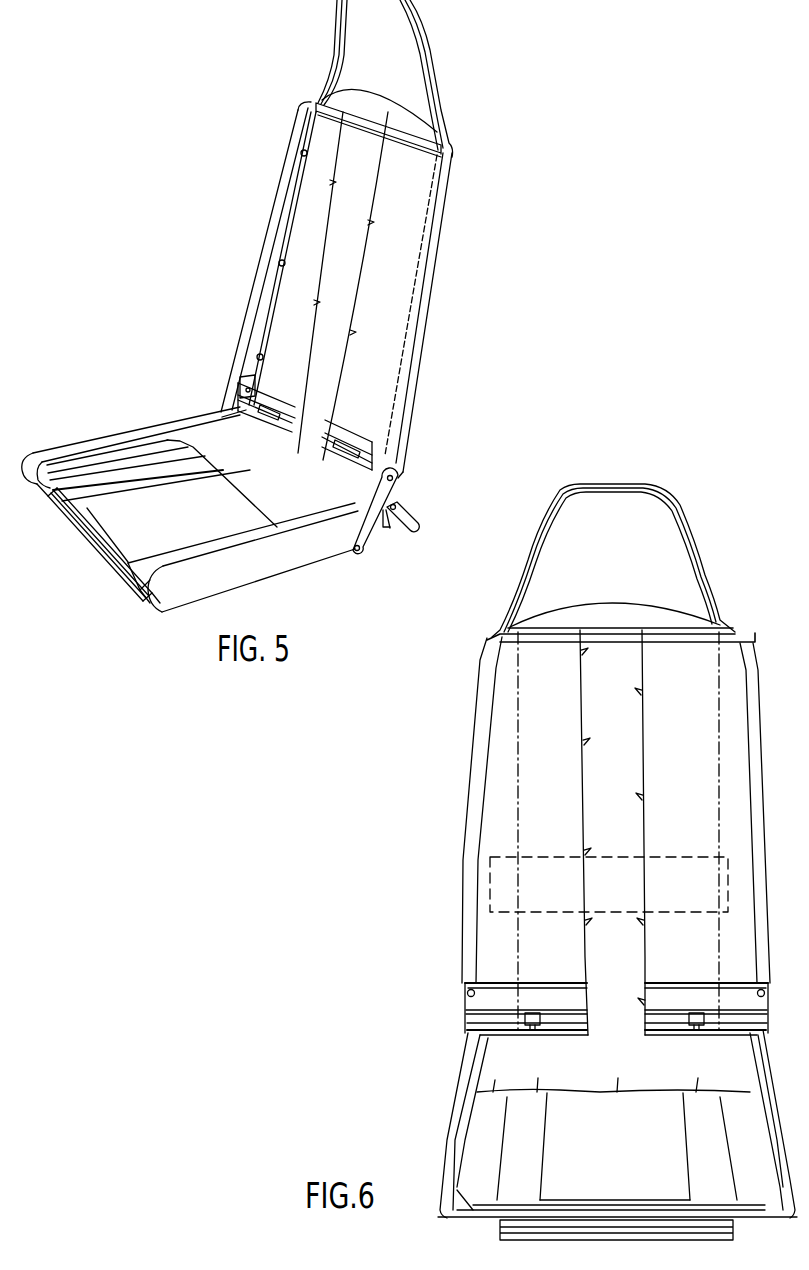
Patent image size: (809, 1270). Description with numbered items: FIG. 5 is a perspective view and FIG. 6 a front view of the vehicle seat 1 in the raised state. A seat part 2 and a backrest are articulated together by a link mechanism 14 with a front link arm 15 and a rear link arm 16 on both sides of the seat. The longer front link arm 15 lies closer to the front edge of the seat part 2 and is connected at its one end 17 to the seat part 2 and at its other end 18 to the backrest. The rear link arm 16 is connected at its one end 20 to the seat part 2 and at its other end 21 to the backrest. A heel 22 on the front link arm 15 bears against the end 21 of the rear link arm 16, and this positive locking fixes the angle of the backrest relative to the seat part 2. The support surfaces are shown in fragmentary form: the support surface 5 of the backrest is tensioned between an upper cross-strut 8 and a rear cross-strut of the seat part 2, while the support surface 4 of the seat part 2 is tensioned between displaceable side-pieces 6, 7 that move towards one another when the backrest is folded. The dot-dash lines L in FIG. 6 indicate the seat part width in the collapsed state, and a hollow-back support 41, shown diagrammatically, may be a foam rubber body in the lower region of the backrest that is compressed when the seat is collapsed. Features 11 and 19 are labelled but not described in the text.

In FIG. 5, the vehicle seat 1 is at (213, 292).
In FIG. 5, the seat part 2 is at (165, 614).
In FIG. 5, the support surface 4 is at (262, 482).
In FIG. 5, the support surface 5 is at (362, 205).
In FIG. 5, the side-piece 6 is at (88, 446).
In FIG. 5, the side-piece 7 is at (228, 583).
In FIG. 5, the upper cross-strut 8 is at (418, 128).
In FIG. 5, the headrest 11 is at (439, 35).
In FIG. 6, the headrest 11 is at (694, 512).
In FIG. 5, the link mechanism 14 is at (428, 502).
In FIG. 5, the front link arm 15 is at (360, 508).
In FIG. 5, the rear link arm 16 is at (415, 520).
In FIG. 5, the one end of the front link arm 17 is at (352, 556).
In FIG. 5, the other end of the front link arm 18 is at (380, 452).
In FIG. 5, the slide rails 19 is at (88, 552).
In FIG. 5, the one end of the rear link arm 20 is at (412, 533).
In FIG. 5, the other end of the rear link arm 21 is at (418, 470).
In FIG. 5, the heel 22 is at (390, 533).
In FIG. 6, the hollow-back support 41 is at (683, 880).
In FIG. 6, the dot-dash lines L is at (521, 803).